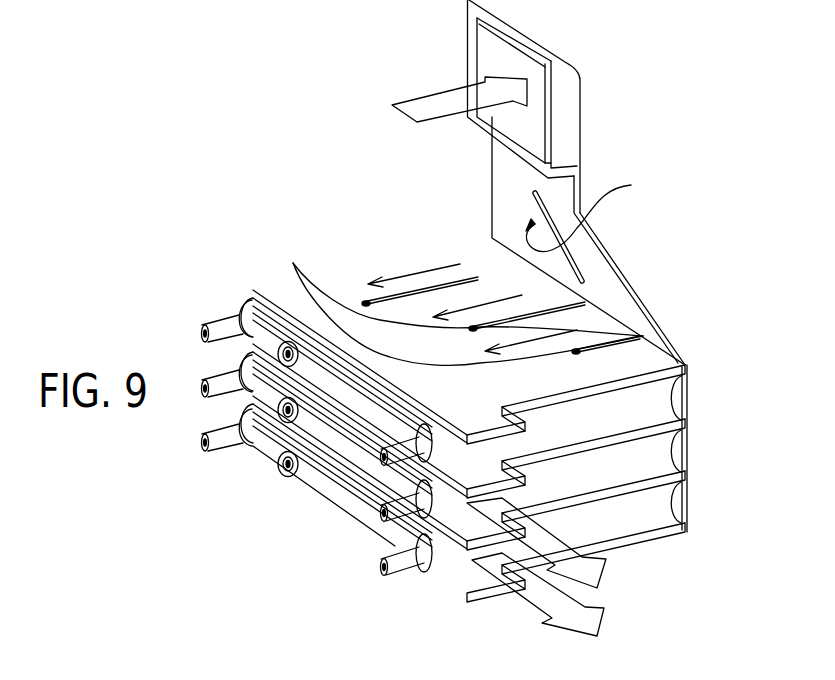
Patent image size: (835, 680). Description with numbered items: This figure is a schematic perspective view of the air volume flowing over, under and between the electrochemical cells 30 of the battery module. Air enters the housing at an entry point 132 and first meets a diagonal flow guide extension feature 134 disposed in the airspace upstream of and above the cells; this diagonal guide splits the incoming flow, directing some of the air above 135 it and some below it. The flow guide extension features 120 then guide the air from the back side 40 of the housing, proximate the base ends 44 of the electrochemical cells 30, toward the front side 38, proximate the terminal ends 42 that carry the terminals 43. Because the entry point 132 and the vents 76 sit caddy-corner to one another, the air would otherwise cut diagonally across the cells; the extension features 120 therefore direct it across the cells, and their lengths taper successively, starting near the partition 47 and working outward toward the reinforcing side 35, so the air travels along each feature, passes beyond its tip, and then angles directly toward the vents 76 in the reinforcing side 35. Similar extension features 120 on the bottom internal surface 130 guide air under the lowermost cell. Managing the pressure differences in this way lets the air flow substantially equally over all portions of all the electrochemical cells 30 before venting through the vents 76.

The electrochemical cells 30 is at (633, 413).
The reinforcing side 35 is at (592, 432).
The front side 38 is at (173, 356).
The back side 40 is at (720, 297).
The terminal ends 42 is at (318, 378).
The terminals 43 is at (203, 327).
The base ends 44 is at (683, 400).
The partition 47 is at (380, 241).
The vents 76 is at (428, 450).
The flow guide extension features 120 is at (459, 300).
The bottom internal surface 130 is at (598, 211).
The entry point 132 is at (467, 57).
The diagonal flow guide extension feature 134 is at (583, 262).
The air above the diagonal flow guide extension 135 is at (553, 206).